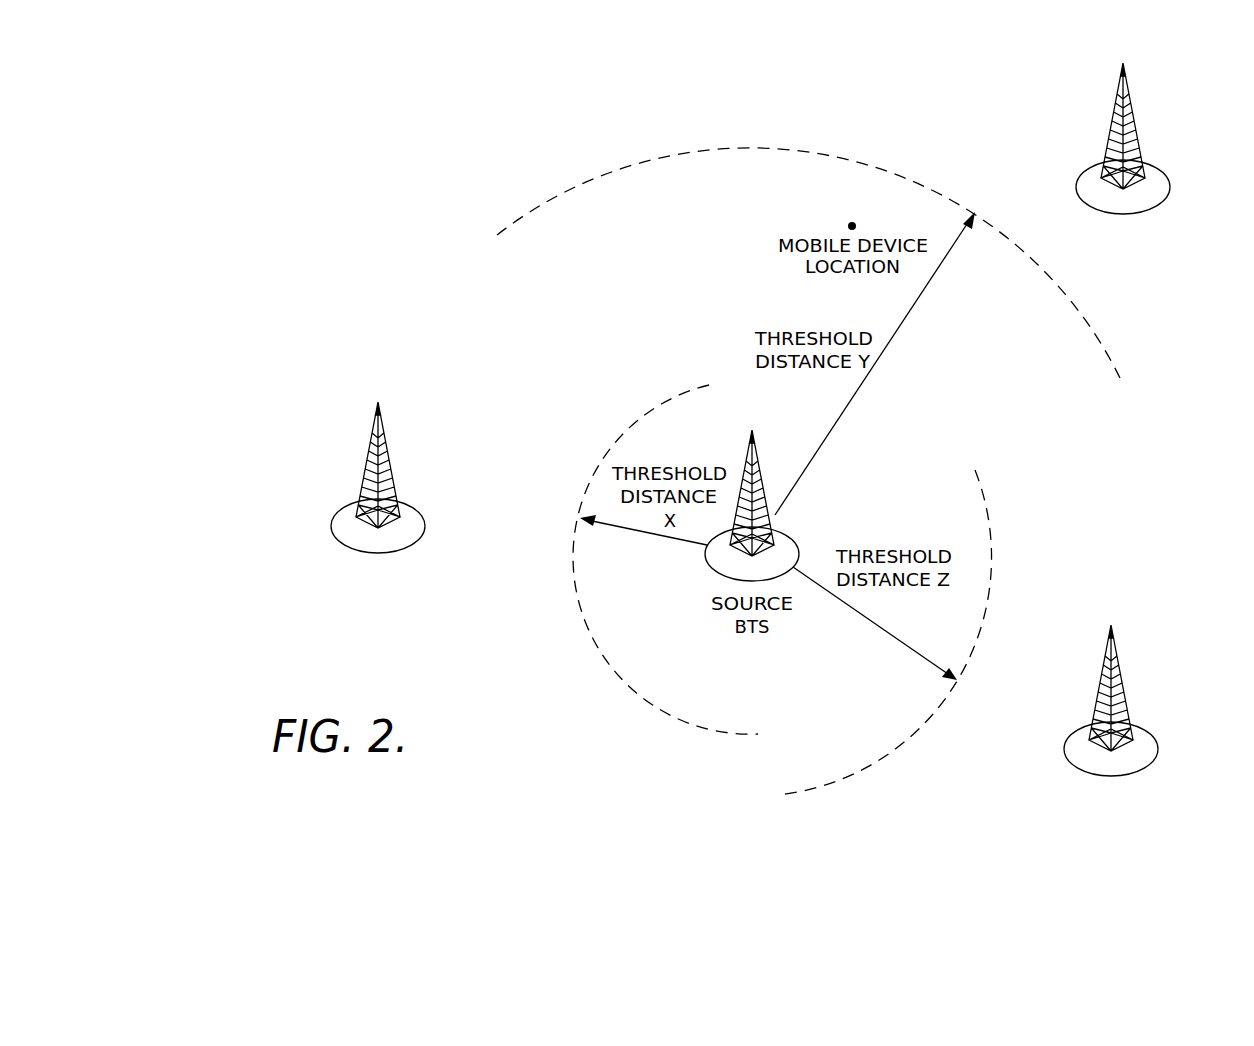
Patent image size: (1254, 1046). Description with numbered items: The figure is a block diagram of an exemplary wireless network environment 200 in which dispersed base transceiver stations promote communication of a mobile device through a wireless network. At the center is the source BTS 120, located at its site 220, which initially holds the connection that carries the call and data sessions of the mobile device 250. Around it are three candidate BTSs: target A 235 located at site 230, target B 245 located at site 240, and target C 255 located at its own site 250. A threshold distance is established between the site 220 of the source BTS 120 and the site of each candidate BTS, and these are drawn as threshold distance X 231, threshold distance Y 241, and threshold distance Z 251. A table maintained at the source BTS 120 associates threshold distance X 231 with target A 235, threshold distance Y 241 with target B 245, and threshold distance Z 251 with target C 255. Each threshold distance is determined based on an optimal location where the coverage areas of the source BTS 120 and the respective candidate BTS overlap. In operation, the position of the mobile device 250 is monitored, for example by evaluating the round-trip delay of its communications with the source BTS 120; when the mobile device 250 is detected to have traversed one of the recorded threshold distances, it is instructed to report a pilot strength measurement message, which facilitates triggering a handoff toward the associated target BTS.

The wireless network environment 200 is at (408, 174).
The source BTS 120 is at (745, 460).
The site of the source BTS 220 is at (790, 535).
The threshold distance X 231 is at (650, 408).
The threshold distance Y 241 is at (858, 771).
The threshold distance Z 251 is at (650, 162).
The mobile device 250 is at (1148, 730).
The site of target A 230 is at (413, 505).
The target A 235 is at (388, 455).
The site of target B 240 is at (1158, 168).
The target B 245 is at (1135, 116).
The target C 255 is at (1120, 677).